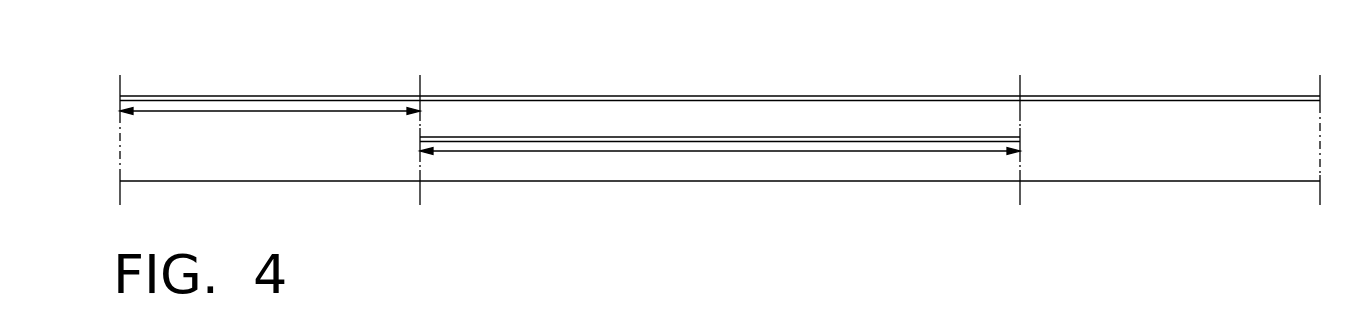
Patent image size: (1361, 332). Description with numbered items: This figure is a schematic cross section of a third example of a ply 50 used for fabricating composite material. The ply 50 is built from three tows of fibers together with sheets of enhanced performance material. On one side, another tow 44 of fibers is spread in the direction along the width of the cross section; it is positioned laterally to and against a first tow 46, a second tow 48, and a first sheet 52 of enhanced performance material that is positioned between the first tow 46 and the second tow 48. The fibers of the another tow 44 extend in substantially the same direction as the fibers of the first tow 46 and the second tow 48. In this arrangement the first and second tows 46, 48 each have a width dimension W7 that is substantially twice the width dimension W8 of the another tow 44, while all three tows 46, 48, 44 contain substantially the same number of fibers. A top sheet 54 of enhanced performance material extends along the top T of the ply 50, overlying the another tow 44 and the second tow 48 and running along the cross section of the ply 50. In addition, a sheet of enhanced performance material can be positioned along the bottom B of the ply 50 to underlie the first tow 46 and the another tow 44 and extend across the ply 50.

The another tow 44 is at (162, 157).
The first tow 46 is at (632, 168).
The second tow 48 is at (529, 113).
The ply 50 is at (1203, 75).
The first sheet of enhanced performance material 52 is at (762, 142).
The top sheet of enhanced performance material 54 is at (652, 94).
The width dimension of another tow W8 is at (250, 111).
The width dimension of first and second tows W7 is at (752, 152).
The top of ply T is at (1080, 95).
The bottom of ply B is at (1078, 182).